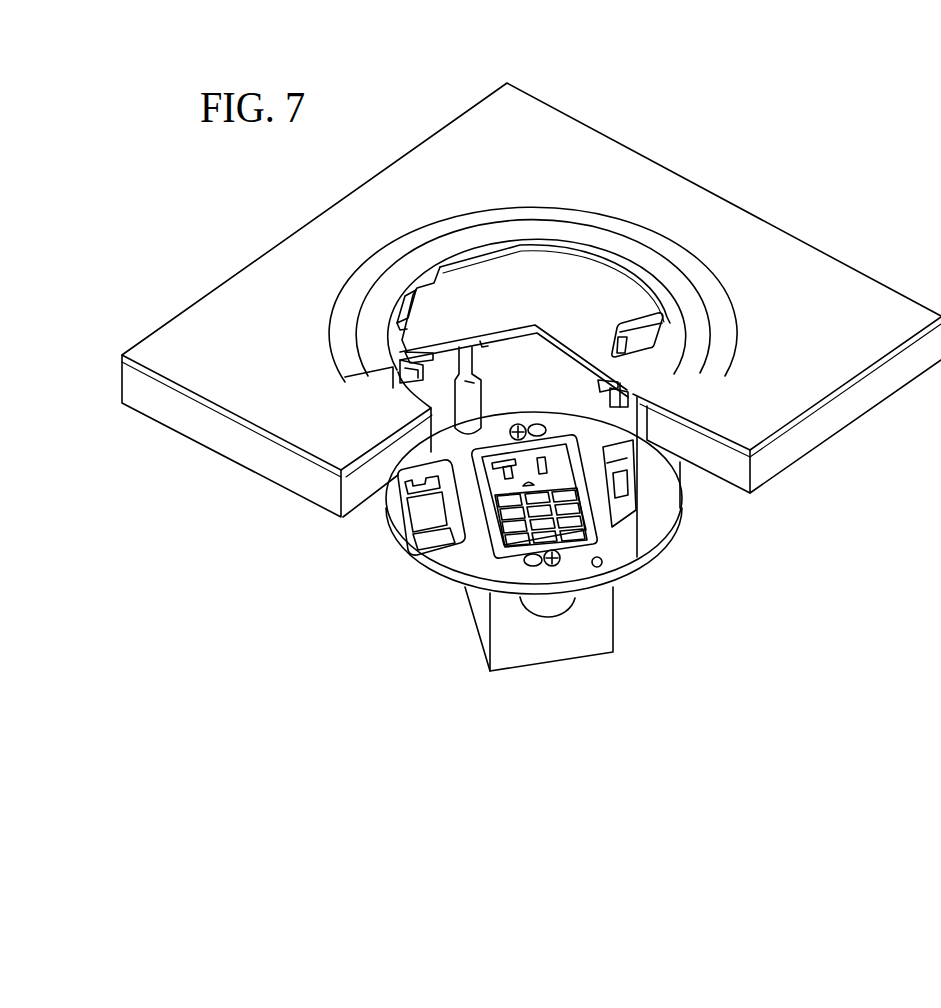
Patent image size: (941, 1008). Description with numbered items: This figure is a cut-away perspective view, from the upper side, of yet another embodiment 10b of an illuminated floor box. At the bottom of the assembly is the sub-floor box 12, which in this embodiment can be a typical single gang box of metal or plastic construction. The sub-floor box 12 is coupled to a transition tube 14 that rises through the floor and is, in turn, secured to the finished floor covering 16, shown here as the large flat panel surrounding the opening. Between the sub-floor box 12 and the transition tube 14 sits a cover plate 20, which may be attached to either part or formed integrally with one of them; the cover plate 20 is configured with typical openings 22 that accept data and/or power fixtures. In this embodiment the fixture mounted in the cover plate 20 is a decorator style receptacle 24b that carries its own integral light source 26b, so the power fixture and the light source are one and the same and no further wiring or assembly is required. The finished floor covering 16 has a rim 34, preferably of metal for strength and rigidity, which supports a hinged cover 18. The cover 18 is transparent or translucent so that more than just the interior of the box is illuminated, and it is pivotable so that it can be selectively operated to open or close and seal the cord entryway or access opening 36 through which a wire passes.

The illuminated floor box 10b is at (772, 198).
The sub-floor box 12 is at (537, 663).
The transition tube 14 is at (662, 490).
The finished floor covering 16 is at (737, 310).
The hinged cover 18 is at (513, 267).
The cover plate 20 is at (465, 564).
The openings 22 is at (492, 458).
The decorator style receptacle 24b is at (553, 468).
The integral light source 26b is at (432, 470).
The rim 34 is at (340, 342).
The access opening 36 is at (638, 313).